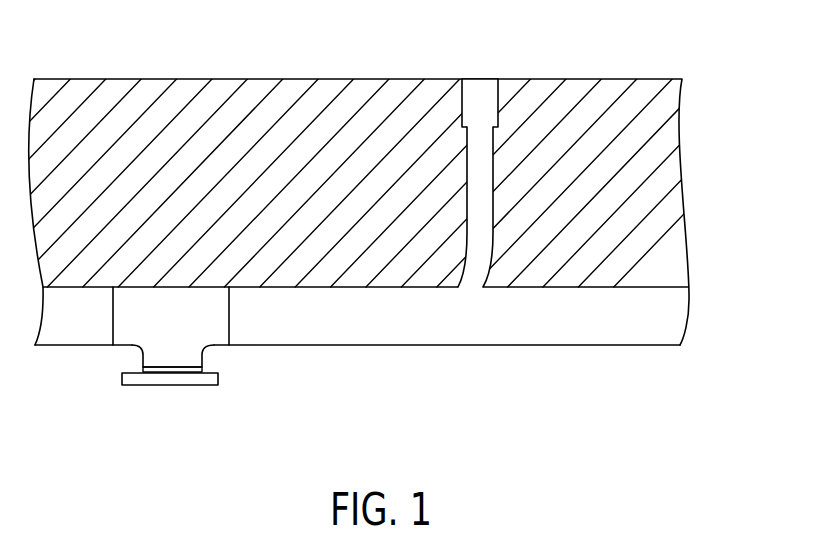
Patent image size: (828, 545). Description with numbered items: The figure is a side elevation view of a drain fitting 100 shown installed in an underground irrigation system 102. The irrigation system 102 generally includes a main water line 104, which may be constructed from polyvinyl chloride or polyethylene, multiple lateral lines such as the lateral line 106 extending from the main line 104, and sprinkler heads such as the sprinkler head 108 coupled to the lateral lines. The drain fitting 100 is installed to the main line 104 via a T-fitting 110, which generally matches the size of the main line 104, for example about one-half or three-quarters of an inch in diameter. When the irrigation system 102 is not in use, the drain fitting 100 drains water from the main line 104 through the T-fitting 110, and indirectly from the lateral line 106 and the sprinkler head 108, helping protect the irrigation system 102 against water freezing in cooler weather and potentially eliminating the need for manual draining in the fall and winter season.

The drain fitting 100 is at (407, 254).
The irrigation system 102 is at (715, 95).
The main water line 104 is at (552, 345).
The lateral line 106 is at (495, 173).
The sprinkler head 108 is at (480, 87).
The T-fitting 110 is at (208, 326).